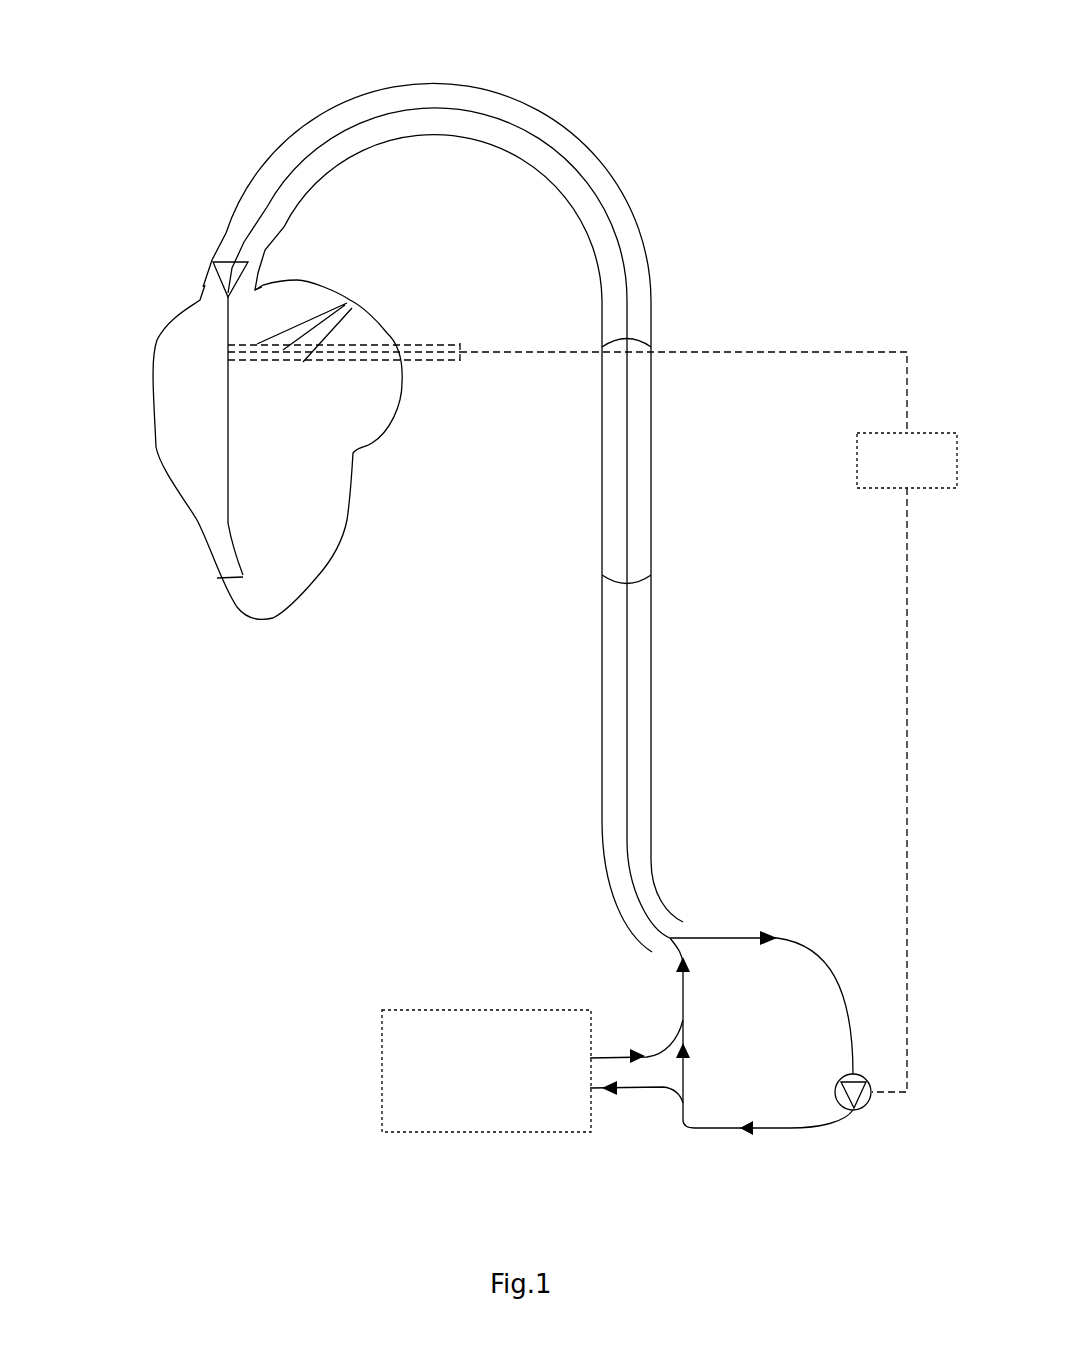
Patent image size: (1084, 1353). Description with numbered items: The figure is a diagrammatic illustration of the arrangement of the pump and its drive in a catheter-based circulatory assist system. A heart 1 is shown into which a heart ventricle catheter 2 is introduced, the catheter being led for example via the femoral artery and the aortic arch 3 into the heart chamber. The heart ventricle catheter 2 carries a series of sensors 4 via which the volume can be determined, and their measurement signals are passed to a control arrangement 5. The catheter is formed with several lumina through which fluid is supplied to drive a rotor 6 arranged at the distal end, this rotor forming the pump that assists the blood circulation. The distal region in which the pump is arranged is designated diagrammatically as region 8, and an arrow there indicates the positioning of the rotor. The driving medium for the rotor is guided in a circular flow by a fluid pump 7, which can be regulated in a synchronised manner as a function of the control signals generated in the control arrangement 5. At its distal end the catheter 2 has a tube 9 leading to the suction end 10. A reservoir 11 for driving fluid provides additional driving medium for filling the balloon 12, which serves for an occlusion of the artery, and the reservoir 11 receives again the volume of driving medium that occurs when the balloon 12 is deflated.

The heart 1 is at (185, 345).
The heart ventricle catheter 2 is at (248, 217).
The aortic arch 3 is at (320, 122).
The sensors 4 is at (347, 303).
The control arrangement 5 is at (878, 456).
The rotor 6 is at (258, 275).
The fluid pump 7 is at (840, 1088).
The distal region 8 is at (188, 268).
The tube 9 is at (228, 424).
The suction end 10 is at (243, 577).
The reservoir 11 is at (400, 1100).
The balloon 12 is at (615, 552).